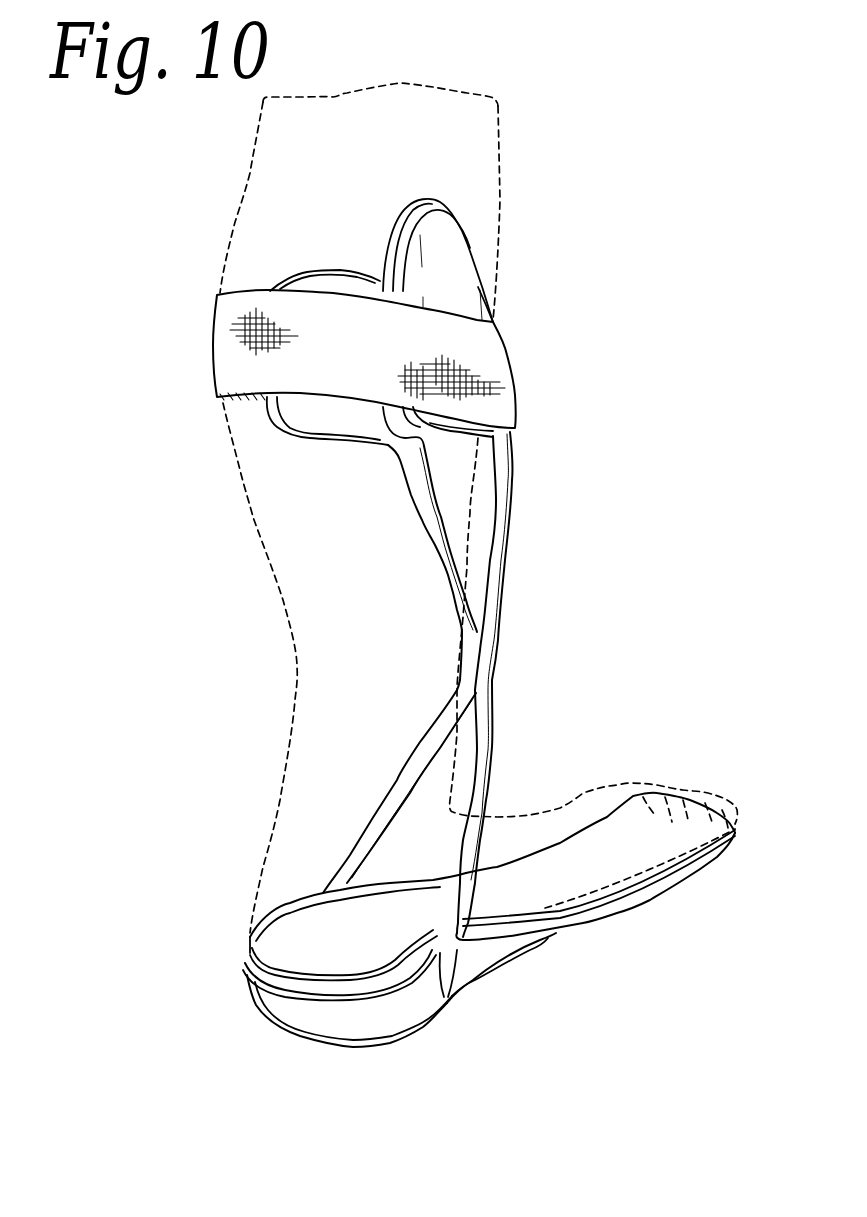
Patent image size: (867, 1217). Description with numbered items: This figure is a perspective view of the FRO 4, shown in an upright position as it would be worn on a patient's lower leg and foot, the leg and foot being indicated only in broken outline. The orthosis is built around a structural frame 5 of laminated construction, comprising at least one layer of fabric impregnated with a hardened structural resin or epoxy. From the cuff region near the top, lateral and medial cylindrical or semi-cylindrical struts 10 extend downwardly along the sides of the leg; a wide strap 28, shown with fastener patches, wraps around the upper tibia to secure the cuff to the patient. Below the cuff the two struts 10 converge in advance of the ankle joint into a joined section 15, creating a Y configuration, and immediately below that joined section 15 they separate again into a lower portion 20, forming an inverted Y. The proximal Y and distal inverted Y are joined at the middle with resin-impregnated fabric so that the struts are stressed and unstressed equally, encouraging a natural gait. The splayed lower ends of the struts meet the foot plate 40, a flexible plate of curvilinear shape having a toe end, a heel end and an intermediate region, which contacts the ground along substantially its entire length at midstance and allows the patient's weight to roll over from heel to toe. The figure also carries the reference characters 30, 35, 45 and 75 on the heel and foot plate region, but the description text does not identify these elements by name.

The straps 28 is at (485, 350).
The structural frame 5 is at (552, 407).
The FRO 4 is at (515, 468).
The struts 10 is at (500, 517).
The joined section 15 is at (480, 663).
The lower portion 20 is at (403, 792).
The heel cup 30 is at (292, 1015).
The arch connector 35 is at (520, 940).
The heel post 75 is at (448, 960).
The foot plate 40 is at (550, 927).
The toe end of footplate 45 is at (707, 837).